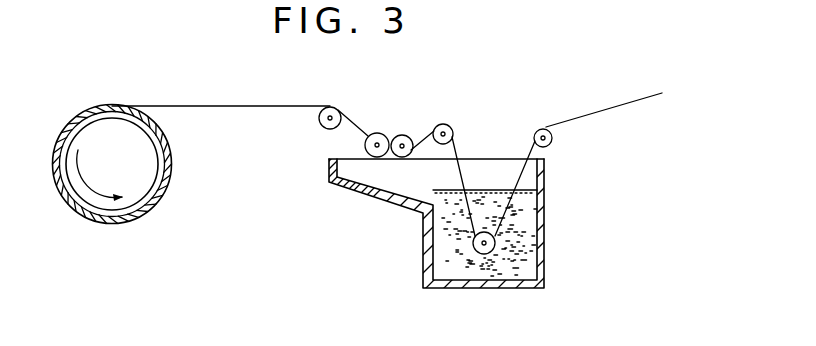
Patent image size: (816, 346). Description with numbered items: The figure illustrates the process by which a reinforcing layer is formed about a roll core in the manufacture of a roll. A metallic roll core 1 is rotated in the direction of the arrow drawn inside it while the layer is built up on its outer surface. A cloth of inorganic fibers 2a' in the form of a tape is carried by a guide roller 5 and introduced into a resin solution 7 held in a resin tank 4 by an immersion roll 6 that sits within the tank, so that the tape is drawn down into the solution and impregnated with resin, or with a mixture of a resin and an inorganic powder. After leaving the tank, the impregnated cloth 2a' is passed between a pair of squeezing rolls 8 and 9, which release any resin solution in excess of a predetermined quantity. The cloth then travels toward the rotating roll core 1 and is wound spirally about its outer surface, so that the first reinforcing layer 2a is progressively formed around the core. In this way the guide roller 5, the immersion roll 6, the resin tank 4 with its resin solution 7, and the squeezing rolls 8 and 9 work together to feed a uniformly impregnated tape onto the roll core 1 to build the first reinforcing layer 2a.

The metallic roll core 1 is at (168, 182).
The first reinforcing layer 2a is at (323, 171).
The cloth of inorganic fibers 2a' is at (604, 96).
The resin tank 4 is at (546, 235).
The guide roller 5 is at (552, 139).
The immersion roll 6 is at (487, 248).
The resin solution 7 is at (446, 233).
The squeezing roll 8 is at (402, 135).
The squeezing roll 9 is at (378, 133).